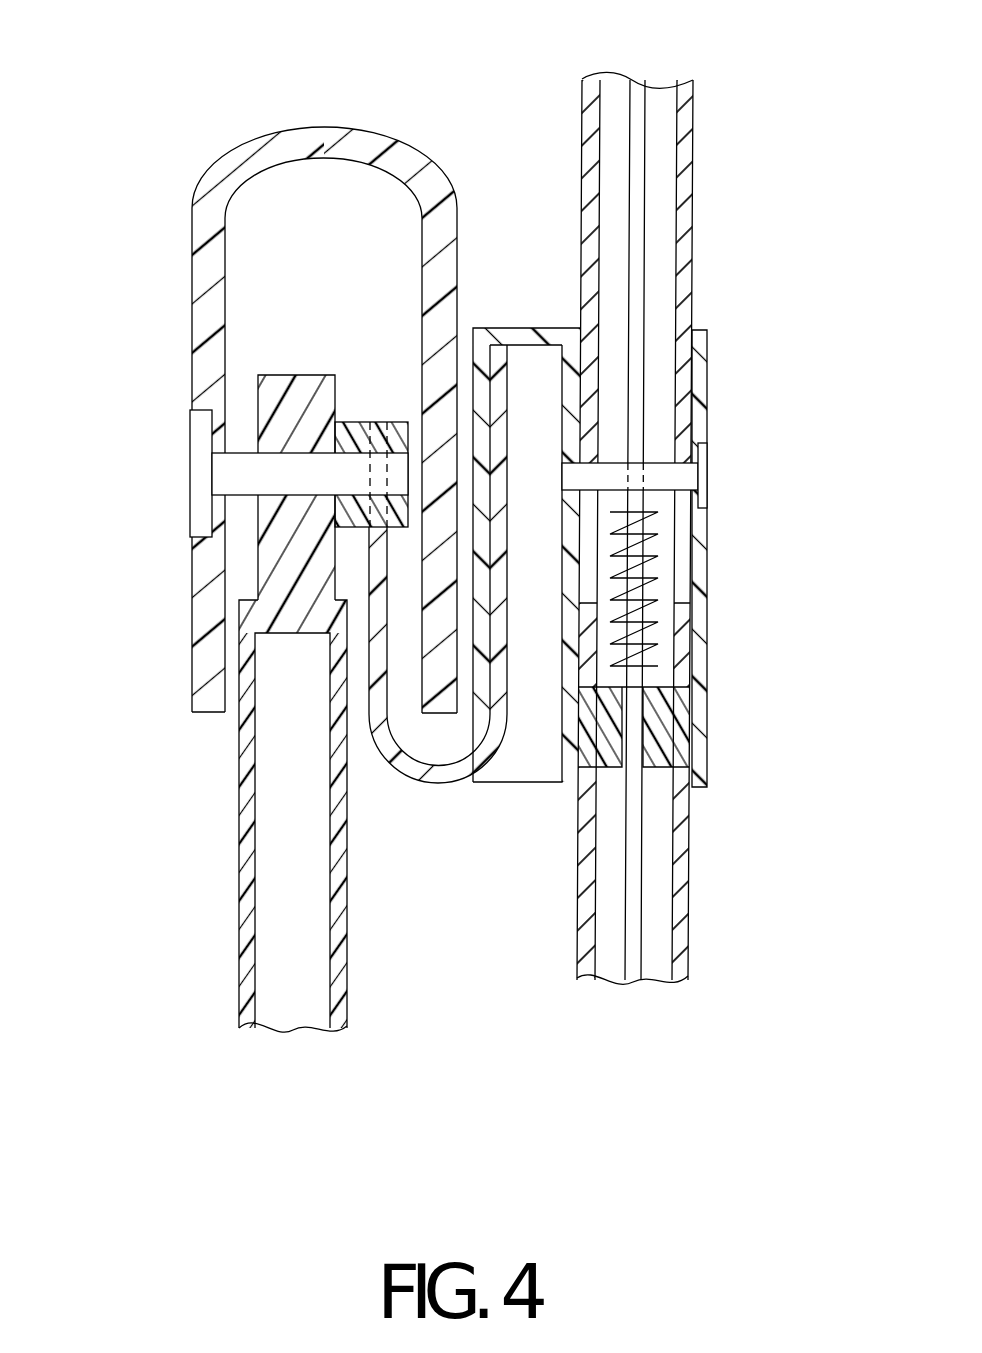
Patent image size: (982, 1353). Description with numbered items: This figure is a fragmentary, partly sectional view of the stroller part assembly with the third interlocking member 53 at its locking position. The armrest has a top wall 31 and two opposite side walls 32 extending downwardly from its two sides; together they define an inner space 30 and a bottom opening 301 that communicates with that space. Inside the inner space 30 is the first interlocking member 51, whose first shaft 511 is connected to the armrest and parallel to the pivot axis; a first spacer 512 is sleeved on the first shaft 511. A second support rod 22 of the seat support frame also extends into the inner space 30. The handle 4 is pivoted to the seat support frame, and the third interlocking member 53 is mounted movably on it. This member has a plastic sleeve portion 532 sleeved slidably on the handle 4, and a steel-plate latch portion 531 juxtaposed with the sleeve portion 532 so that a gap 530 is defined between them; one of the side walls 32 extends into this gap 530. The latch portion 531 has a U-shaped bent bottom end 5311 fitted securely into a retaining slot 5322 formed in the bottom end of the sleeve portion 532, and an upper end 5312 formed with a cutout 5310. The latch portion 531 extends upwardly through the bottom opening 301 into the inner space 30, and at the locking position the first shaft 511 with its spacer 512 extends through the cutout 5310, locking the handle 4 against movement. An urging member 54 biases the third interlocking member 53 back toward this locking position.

The handle 4 is at (693, 193).
The second support rod 22 is at (239, 907).
The inner space 30 is at (310, 218).
The top wall 31 is at (328, 127).
The side walls 32 is at (192, 270).
The bottom opening 301 is at (230, 695).
The first interlocking member 51 is at (381, 404).
The first shaft 511 is at (240, 478).
The first spacer 512 is at (358, 420).
The third interlocking member 53 is at (362, 578).
The gap 530 is at (431, 742).
The latch portion 531 is at (368, 673).
The cutout 5310 is at (378, 472).
The bent bottom end 5311 is at (450, 780).
The upper end 5312 is at (378, 452).
The sleeve portion 532 is at (707, 392).
The retaining slot 5322 is at (510, 673).
The urging member 54 is at (655, 590).